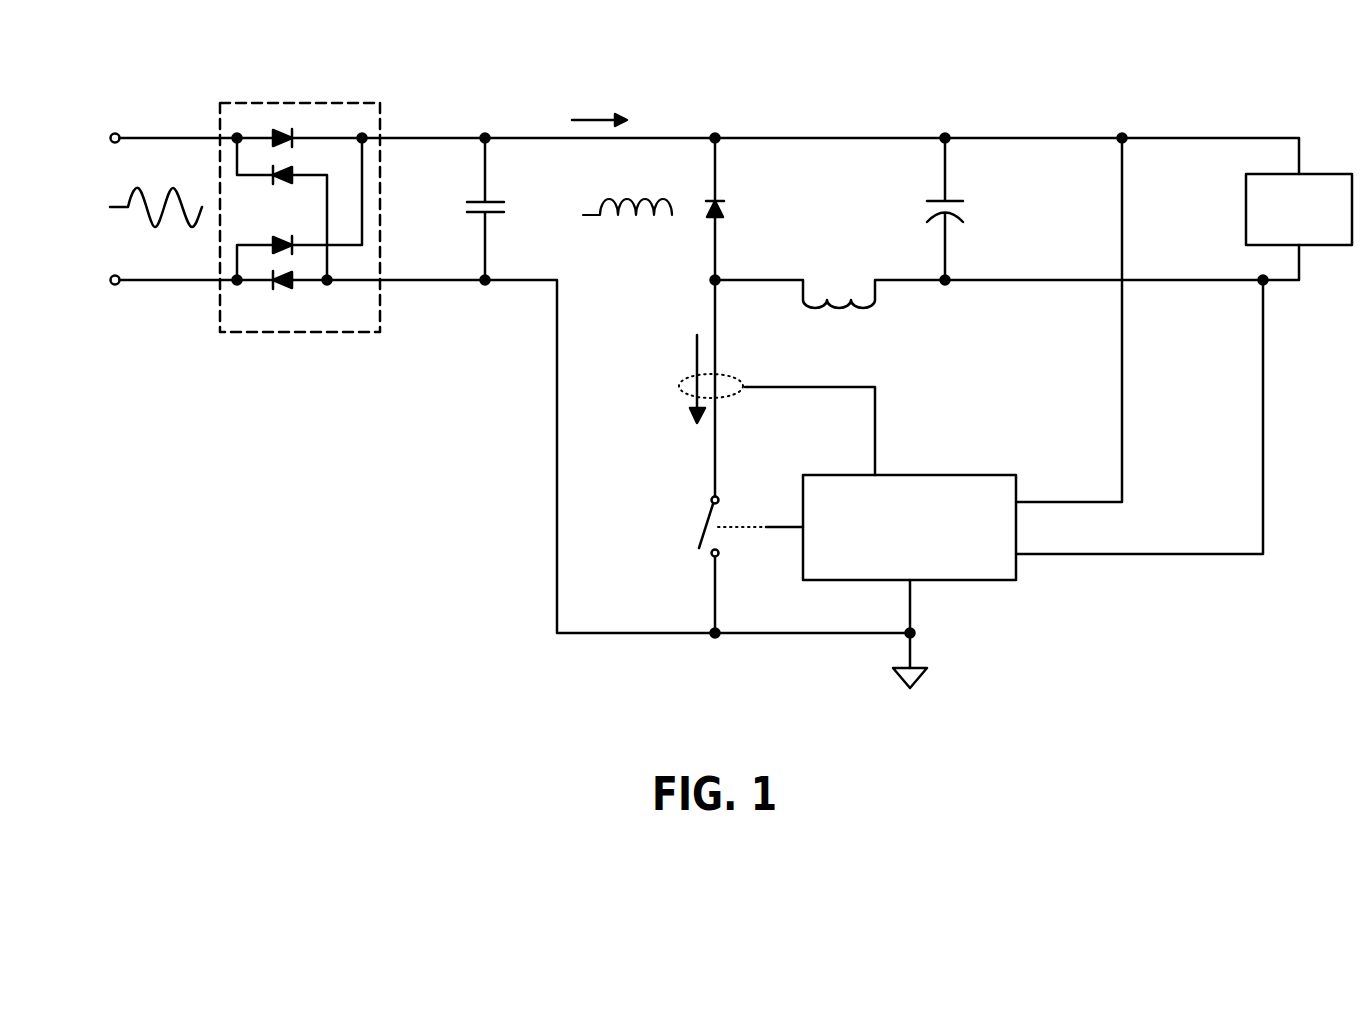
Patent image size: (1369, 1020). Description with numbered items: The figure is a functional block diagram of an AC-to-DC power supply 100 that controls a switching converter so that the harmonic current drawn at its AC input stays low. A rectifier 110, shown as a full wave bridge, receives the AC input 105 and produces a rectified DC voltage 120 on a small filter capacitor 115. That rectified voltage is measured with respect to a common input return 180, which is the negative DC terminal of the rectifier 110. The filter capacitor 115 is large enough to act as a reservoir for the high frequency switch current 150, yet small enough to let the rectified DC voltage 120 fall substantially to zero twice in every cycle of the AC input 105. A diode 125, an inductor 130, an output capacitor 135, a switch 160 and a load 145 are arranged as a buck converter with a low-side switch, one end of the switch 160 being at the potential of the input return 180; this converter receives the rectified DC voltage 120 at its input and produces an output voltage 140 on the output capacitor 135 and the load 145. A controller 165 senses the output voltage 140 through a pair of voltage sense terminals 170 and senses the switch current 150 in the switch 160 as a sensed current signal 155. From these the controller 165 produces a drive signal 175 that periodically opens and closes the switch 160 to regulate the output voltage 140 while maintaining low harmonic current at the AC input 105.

The AC-to-DC power supply 100 is at (363, 504).
The AC input 105 is at (88, 193).
The rectifier 110 is at (213, 103).
The filter capacitor C1 115 is at (472, 187).
The rectified DC voltage VRECT 120 is at (572, 197).
The diode D1 125 is at (735, 198).
The inductor L1 130 is at (860, 315).
The output capacitor C2 135 is at (933, 190).
The output voltage VO 140 is at (1010, 197).
The load 145 is at (1235, 208).
The switch current ID 150 is at (603, 100).
The sensed current signal 155 is at (878, 420).
The switch S1 160 is at (702, 507).
The controller 165 is at (972, 588).
The voltage sense terminals 170 is at (1252, 488).
The drive signal 175 is at (787, 522).
The input return 180 is at (893, 675).